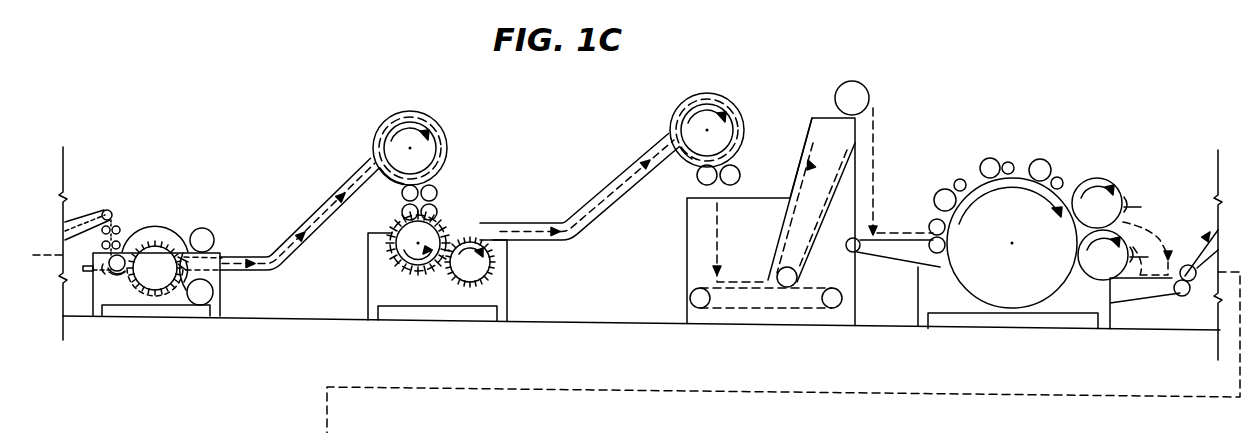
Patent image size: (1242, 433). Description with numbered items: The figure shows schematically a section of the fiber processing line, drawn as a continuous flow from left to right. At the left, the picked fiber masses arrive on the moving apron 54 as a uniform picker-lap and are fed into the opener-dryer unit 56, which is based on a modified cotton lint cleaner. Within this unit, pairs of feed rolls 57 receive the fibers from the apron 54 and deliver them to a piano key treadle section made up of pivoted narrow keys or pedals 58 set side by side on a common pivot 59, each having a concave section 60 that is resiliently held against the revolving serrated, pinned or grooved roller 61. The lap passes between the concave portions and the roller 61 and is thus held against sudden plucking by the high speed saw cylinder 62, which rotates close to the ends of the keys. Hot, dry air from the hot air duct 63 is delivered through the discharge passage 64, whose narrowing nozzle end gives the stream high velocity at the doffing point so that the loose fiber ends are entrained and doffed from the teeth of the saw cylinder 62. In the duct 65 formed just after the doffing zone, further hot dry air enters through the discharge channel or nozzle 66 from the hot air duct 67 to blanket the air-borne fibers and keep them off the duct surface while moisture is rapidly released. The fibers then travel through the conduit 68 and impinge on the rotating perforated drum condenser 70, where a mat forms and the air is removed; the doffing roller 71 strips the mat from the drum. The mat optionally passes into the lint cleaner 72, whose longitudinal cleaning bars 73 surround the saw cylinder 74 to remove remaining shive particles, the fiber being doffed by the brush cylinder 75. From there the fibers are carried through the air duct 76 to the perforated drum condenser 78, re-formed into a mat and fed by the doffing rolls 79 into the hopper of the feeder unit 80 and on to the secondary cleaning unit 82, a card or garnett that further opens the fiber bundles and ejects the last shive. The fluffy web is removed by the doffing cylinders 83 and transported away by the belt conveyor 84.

The moving apron 54 is at (83, 212).
The opener-dryer unit 56 is at (153, 228).
The feed rolls 57 is at (108, 211).
The keys or pedals 58 is at (87, 271).
The common pivot 59 is at (107, 272).
The concave section 60 is at (113, 272).
The serrated, pinned or grooved roller 61 is at (119, 257).
The saw cylinder 62 is at (163, 240).
The hot air duct 63 is at (206, 293).
The discharge passage 64 is at (182, 278).
The duct 65 is at (218, 257).
The discharge channel or nozzle 66 is at (183, 254).
The hot air duct 67 is at (206, 230).
The conduit 68 is at (315, 212).
The perforated drum condenser 70 is at (408, 141).
The doffing roller 71 is at (402, 193).
The lint cleaner 72 is at (378, 288).
The cleaning bars 73 is at (390, 260).
The saw cylinder 74 is at (433, 233).
The brush cylinder 75 is at (490, 264).
The air duct 76 is at (602, 190).
The perforated drum condenser 78 is at (710, 120).
The doffing rolls 79 is at (698, 181).
The feeder unit 80 is at (755, 197).
The secondary cleaning unit 82 is at (982, 205).
The doffing cylinders 83 is at (1093, 192).
The belt conveyor 84 is at (1188, 253).